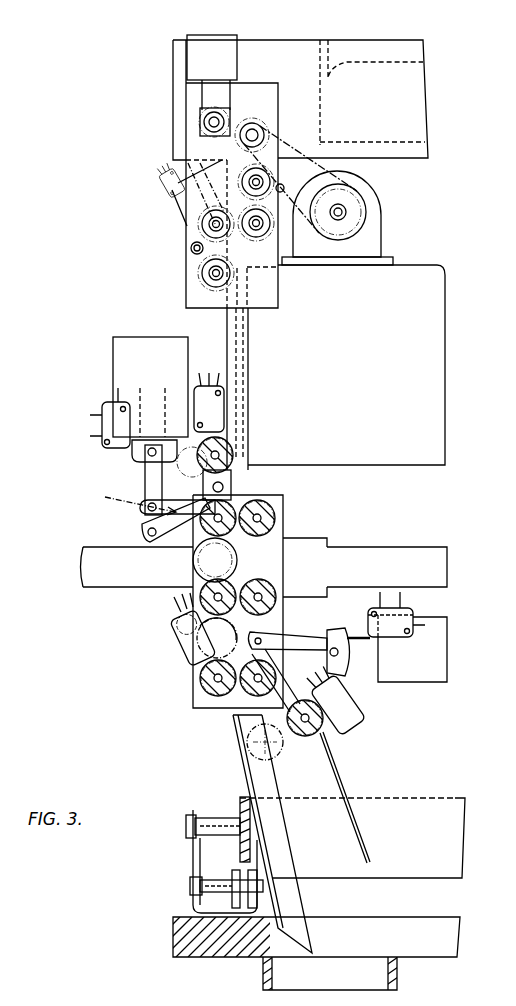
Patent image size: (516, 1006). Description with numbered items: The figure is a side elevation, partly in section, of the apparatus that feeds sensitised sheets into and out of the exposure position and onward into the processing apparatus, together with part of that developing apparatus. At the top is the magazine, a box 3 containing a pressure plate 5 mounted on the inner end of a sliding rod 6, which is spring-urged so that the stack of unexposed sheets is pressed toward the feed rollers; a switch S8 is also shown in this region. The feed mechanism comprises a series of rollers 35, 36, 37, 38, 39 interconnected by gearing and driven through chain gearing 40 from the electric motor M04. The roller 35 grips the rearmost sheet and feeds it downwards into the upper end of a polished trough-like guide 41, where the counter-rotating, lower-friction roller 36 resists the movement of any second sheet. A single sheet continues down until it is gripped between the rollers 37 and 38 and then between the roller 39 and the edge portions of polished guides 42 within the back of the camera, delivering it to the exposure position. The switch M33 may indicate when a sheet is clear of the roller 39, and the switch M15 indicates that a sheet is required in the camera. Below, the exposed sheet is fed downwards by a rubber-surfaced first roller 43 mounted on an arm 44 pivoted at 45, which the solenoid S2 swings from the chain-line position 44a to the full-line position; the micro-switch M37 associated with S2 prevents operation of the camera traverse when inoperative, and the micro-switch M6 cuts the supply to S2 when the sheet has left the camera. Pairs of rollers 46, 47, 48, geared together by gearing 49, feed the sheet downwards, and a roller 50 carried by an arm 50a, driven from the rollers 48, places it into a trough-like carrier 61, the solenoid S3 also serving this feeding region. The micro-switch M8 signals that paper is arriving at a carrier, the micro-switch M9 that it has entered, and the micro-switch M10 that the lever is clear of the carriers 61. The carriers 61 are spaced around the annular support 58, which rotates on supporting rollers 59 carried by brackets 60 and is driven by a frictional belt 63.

The box 3 is at (280, 50).
The pressure plate 5 is at (330, 52).
The sliding rod 6 is at (403, 56).
The switch S8 is at (211, 46).
The roller 35 is at (272, 122).
The roller 36 is at (180, 150).
The roller 37 is at (283, 270).
The roller 38 is at (200, 226).
The roller 39 is at (200, 273).
The chain gearing 40 is at (298, 66).
The trough-like guide 41 is at (182, 203).
The polished guides 42 is at (236, 327).
The first roller 43 is at (232, 450).
The arm 44 is at (225, 490).
The arm position 44a is at (125, 498).
The pivot 45 is at (173, 491).
The pair of rollers 46 is at (236, 585).
The pair of rollers 47 is at (262, 580).
The pair of rollers 48 is at (228, 698).
The gearing 49 is at (193, 560).
The roller 50 is at (312, 740).
The arm 50a is at (265, 650).
The annular support 58 is at (244, 800).
The supporting rollers 59 is at (232, 900).
The brackets 60 is at (193, 865).
The carriers 61 is at (283, 846).
The frictional belt 63 is at (234, 822).
The electric motor M04 is at (370, 243).
The switch M33 is at (163, 186).
The micro-switch M37 is at (98, 414).
The switch M15 is at (217, 417).
The micro-switch M6 is at (176, 600).
The micro-switch M8 is at (180, 634).
The micro-switch M9 is at (345, 716).
The micro-switch M10 is at (410, 613).
The solenoid S2 is at (126, 358).
The solenoid S3 is at (440, 660).